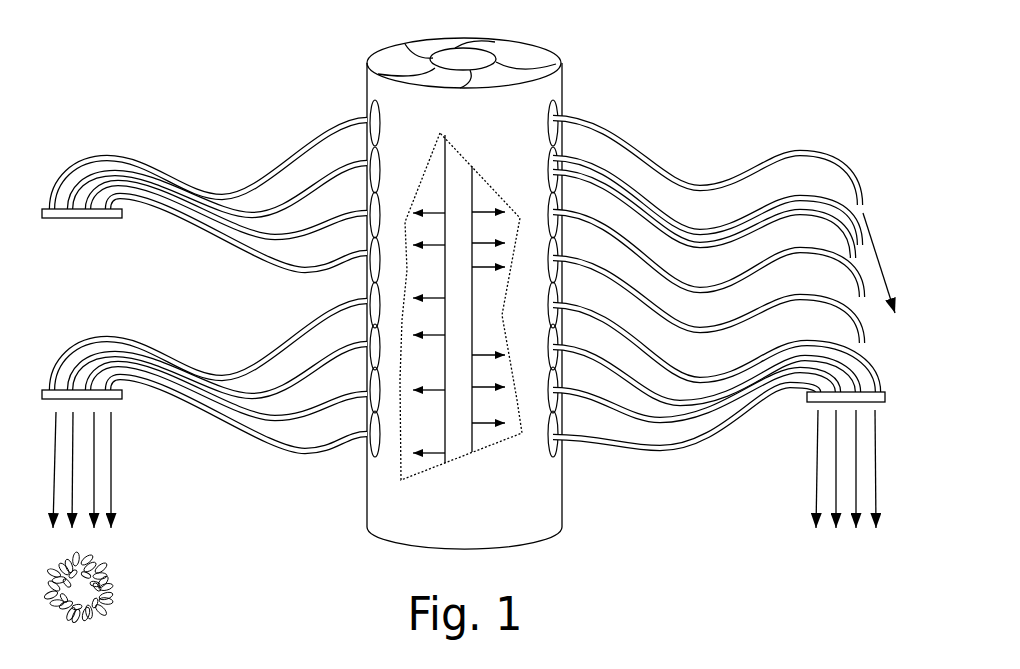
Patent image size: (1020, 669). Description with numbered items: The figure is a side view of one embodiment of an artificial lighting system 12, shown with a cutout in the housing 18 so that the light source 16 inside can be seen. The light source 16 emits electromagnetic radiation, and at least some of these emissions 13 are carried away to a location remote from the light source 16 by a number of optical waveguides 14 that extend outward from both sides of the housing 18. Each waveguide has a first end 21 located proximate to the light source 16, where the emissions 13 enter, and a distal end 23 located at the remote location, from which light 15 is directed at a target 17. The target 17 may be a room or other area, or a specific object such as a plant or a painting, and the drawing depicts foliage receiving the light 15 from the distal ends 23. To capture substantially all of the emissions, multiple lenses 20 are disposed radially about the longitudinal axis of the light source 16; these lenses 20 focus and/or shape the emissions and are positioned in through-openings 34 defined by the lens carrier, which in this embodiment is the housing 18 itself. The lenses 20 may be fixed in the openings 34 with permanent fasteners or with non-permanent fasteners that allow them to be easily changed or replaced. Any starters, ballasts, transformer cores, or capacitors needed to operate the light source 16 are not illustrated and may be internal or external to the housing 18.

The artificial lighting system 12 is at (197, 101).
The emissions 13 is at (485, 208).
The optical waveguides 14 is at (640, 143).
The light 15 is at (112, 458).
The light source 16 is at (456, 189).
The target 17 is at (110, 603).
The housing 18 is at (375, 502).
The lenses 20 is at (562, 447).
The first ends 21 is at (362, 305).
The distal ends 23 is at (50, 388).
The through-openings 34 is at (553, 455).